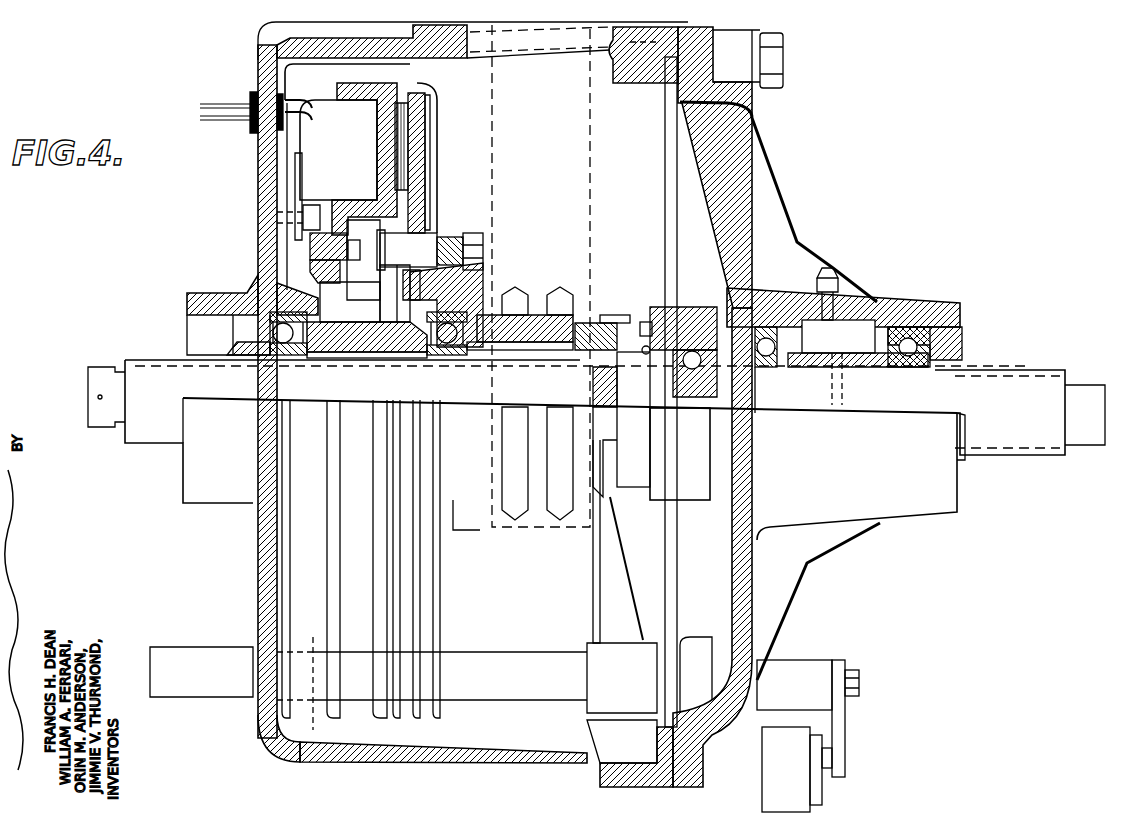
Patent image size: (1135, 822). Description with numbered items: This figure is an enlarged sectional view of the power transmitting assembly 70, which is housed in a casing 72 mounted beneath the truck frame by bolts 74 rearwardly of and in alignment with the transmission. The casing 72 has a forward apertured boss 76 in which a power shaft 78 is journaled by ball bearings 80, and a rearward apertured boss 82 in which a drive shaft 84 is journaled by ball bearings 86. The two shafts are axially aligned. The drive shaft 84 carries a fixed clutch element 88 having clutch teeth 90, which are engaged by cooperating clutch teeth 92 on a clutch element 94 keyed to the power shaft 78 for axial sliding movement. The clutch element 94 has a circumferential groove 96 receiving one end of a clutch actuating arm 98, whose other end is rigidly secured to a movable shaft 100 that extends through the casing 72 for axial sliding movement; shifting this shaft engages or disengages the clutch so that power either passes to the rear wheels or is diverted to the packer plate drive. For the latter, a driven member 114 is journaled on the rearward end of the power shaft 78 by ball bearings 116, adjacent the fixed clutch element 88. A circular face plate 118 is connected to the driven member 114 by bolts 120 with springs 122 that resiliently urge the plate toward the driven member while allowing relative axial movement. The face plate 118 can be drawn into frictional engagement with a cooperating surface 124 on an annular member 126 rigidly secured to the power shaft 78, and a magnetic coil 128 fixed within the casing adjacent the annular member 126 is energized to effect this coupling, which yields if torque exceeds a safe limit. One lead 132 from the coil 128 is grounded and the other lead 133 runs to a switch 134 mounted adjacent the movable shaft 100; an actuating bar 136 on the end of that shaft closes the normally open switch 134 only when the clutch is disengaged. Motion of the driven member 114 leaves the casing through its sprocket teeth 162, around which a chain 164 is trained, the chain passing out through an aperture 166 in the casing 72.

The power transmitting assembly 70 is at (175, 78).
The casing 72 is at (266, 232).
The bolts 74 is at (780, 58).
The forward apertured boss 76 is at (226, 296).
The power shaft 78 is at (158, 372).
The ball bearings 80 is at (292, 356).
The apertured boss 82 is at (908, 305).
The drive shaft 84 is at (1035, 440).
The ball bearings 86 is at (895, 352).
The fixed clutch element 88 is at (674, 318).
The clutch teeth 90 is at (646, 322).
The clutch teeth 92 is at (625, 322).
The clutch element 94 is at (632, 428).
The circumferential groove 96 is at (612, 445).
The clutch actuating arm 98 is at (603, 572).
The movable shaft 100 is at (540, 660).
The driven member 114 is at (470, 297).
The ball bearings 116 is at (470, 355).
The circular face plate 118 is at (416, 152).
The bolts 120 is at (422, 247).
The springs 122 is at (432, 212).
The cooperating surface 124 is at (412, 128).
The annular member 126 is at (380, 90).
The magnetic coil 128 is at (312, 148).
The lead 132 is at (232, 100).
The lead 133 is at (208, 120).
The switch 134 is at (775, 765).
The actuating bar 136 is at (845, 720).
The sprocket teeth 162 is at (553, 295).
The chain 164 is at (530, 527).
The aperture 166 is at (637, 66).